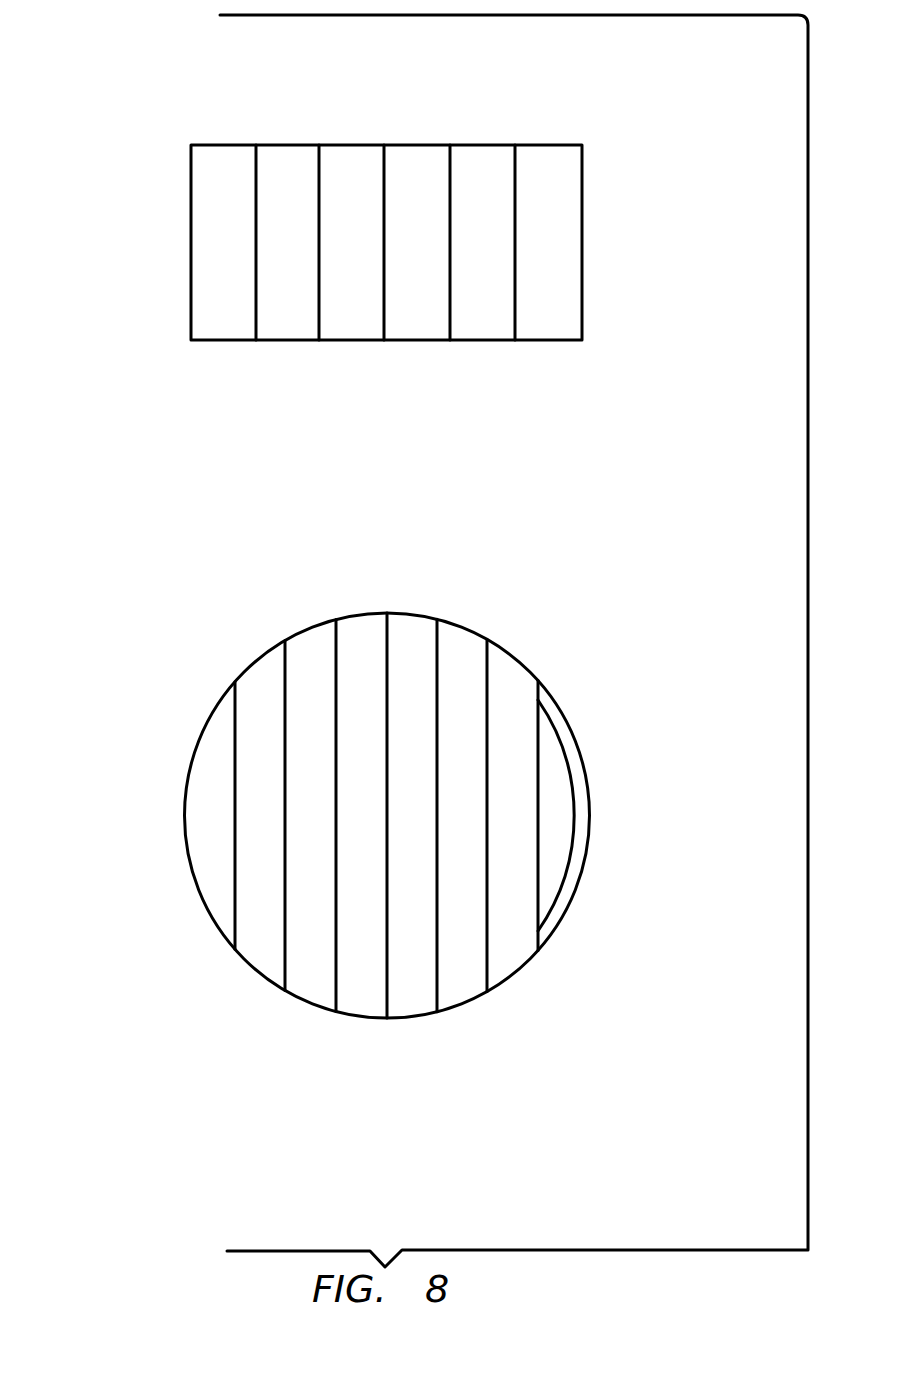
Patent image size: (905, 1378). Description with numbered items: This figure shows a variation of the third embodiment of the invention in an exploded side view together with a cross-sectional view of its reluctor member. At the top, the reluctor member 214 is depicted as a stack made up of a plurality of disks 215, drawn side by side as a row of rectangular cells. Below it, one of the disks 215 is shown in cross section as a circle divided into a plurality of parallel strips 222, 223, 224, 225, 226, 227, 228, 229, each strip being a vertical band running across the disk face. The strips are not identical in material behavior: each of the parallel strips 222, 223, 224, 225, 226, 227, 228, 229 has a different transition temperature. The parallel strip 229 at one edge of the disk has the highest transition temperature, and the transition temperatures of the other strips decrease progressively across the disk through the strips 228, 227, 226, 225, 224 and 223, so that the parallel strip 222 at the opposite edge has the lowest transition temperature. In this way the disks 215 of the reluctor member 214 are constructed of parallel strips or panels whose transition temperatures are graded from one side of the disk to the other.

The reluctor member 214 is at (617, 132).
The disk 215 is at (362, 265).
The parallel strip 222 is at (213, 770).
The parallel strip 223 is at (262, 915).
The parallel strip 224 is at (312, 955).
The parallel strip 225 is at (362, 963).
The parallel strip 226 is at (417, 965).
The parallel strip 227 is at (470, 947).
The parallel strip 228 is at (510, 927).
The parallel strip 229 is at (560, 787).